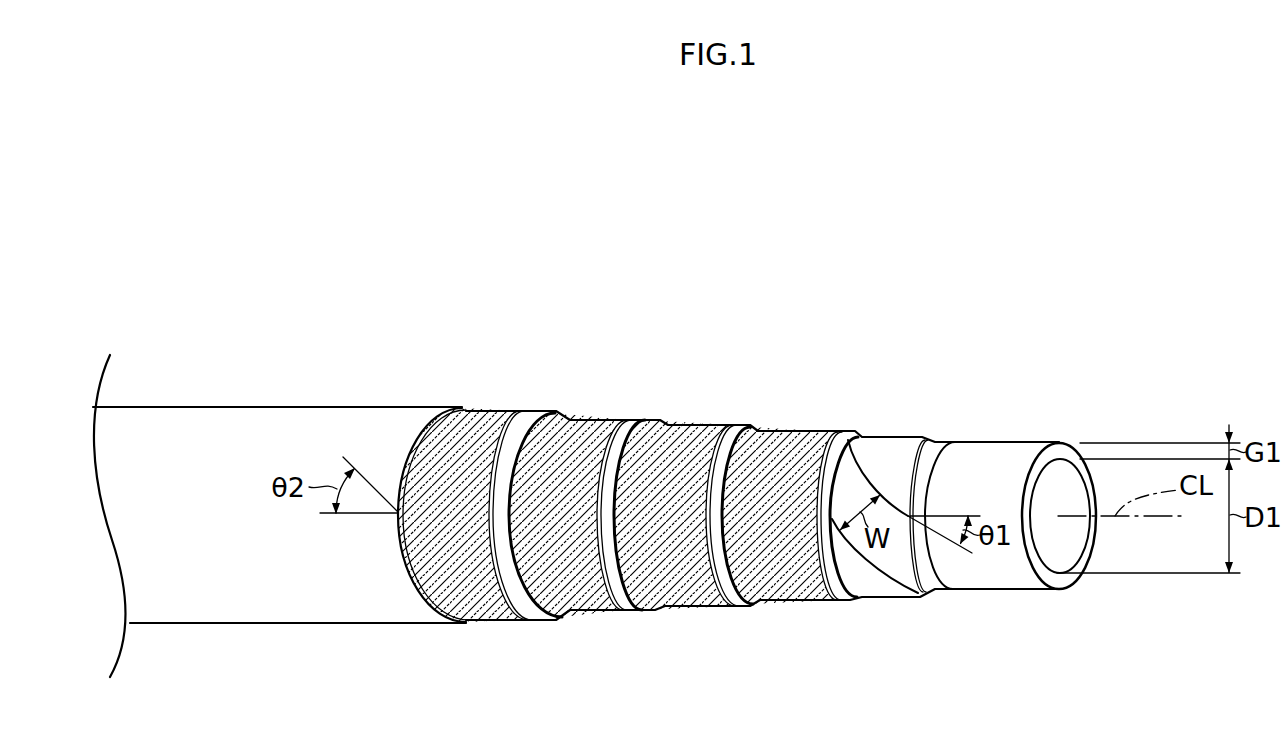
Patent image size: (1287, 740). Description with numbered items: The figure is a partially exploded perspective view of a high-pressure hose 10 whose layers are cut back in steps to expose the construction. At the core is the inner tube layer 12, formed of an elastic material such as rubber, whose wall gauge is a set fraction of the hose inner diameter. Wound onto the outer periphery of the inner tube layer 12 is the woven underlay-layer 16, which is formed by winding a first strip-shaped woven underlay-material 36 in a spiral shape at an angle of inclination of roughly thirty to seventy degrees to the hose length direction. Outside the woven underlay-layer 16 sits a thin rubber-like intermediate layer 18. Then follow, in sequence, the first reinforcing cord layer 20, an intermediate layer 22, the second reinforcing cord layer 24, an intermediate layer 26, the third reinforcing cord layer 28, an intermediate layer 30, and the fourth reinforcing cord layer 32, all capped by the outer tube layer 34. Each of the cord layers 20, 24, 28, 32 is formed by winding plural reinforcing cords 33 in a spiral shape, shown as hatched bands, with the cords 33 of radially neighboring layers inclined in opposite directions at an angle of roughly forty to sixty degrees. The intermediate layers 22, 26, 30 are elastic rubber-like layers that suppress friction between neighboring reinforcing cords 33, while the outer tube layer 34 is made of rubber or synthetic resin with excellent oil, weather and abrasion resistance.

The high-pressure hose 10 is at (428, 300).
The inner tube layer 12 is at (1020, 590).
The woven underlay-layer 16 is at (927, 441).
The intermediate layer 18 is at (845, 437).
The first reinforcing cord layer 20 is at (805, 431).
The intermediate layer 22 is at (740, 430).
The second reinforcing cord layer 24 is at (696, 425).
The intermediate layer 26 is at (636, 431).
The third reinforcing cord layer 28 is at (597, 420).
The intermediate layer 30 is at (537, 427).
The fourth reinforcing cord layer 32 is at (506, 410).
The reinforcing cords 33 is at (476, 603).
The outer tube layer 34 is at (272, 407).
The first strip-shaped woven underlay-material 36 is at (880, 583).